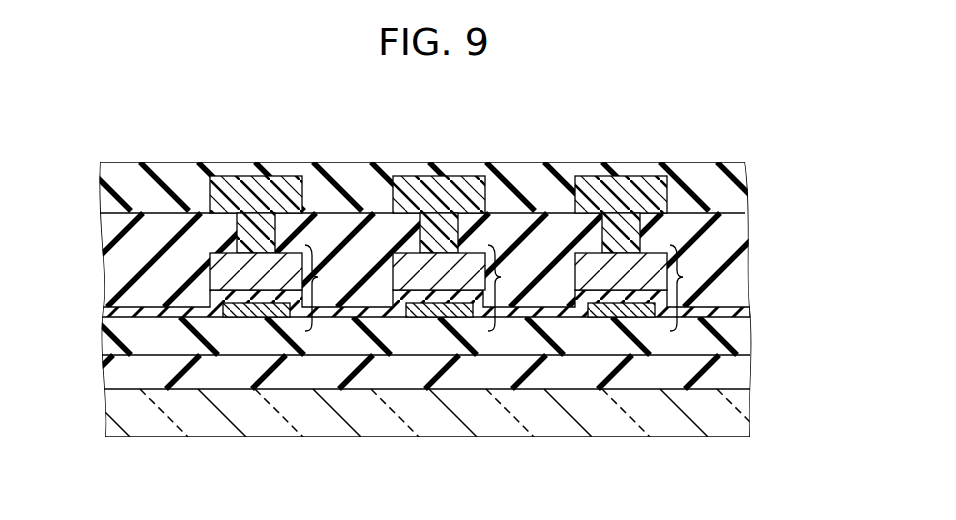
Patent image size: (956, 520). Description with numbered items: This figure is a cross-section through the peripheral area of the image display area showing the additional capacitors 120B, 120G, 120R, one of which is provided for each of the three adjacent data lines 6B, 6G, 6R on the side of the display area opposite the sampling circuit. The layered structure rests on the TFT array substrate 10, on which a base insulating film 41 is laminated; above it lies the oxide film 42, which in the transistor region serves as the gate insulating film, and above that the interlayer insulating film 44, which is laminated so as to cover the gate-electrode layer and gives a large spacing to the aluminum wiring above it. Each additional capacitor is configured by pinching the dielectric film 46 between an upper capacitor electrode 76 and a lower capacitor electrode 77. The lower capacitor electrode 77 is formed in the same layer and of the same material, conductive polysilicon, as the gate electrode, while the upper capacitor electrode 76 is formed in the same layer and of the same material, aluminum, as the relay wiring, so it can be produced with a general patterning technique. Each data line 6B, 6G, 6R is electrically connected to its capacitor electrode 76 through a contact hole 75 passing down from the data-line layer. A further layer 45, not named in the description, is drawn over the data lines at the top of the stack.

The data line 6B is at (243, 183).
The data line 6G is at (415, 183).
The data line 6R is at (588, 183).
The contact hole 75 is at (258, 237).
The capacitor electrode 76 is at (212, 264).
The capacitor electrode 77 is at (237, 320).
The dielectric film 46 is at (105, 308).
The sealing layer 45 is at (745, 173).
The interlayer insulating film 44 is at (744, 277).
The oxide film 42 is at (744, 345).
The base insulating film 41 is at (744, 375).
The TFT array substrate 10 is at (744, 410).
The additional capacitor 120B is at (215, 300).
The additional capacitor 120G is at (479, 300).
The additional capacitor 120R is at (659, 300).